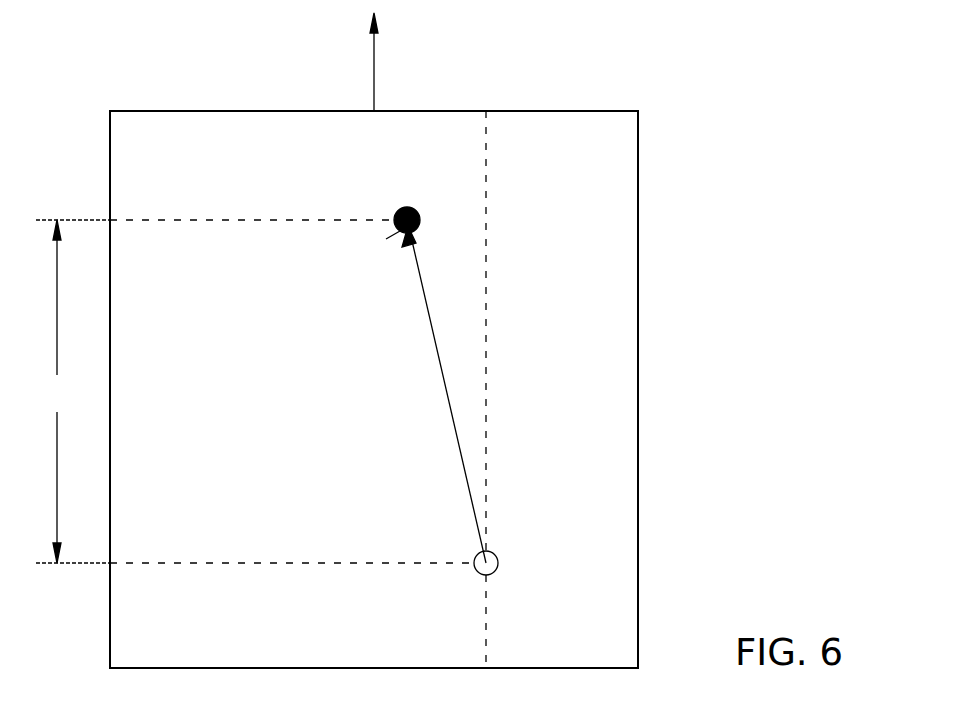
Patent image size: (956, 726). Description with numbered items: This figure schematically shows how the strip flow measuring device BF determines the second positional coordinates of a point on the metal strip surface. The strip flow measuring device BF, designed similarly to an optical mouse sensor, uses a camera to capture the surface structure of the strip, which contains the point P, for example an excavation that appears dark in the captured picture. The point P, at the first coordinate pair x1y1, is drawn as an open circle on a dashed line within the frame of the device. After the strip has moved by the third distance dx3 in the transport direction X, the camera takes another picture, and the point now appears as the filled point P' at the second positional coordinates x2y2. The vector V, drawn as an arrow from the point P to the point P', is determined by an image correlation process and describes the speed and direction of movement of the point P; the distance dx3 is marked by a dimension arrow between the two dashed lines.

The strip flow measuring device BF is at (638, 229).
The transport direction X is at (387, 62).
The third distance dx3 is at (73, 391).
The point P is at (394, 566).
The vector V is at (440, 378).
The point at second position P' is at (295, 144).